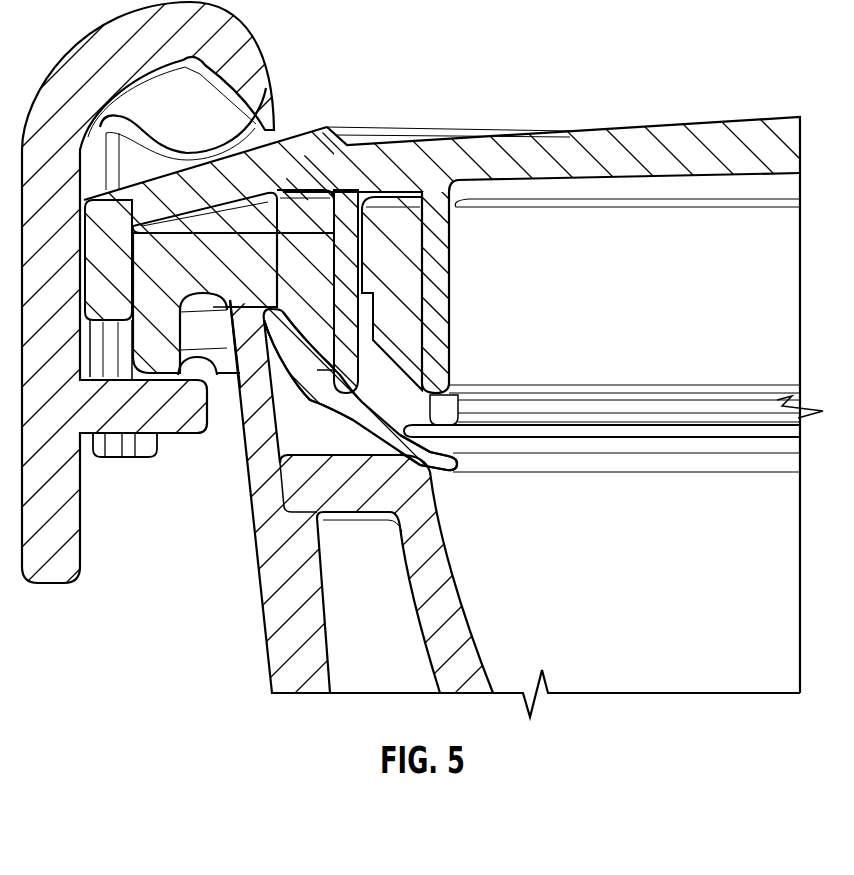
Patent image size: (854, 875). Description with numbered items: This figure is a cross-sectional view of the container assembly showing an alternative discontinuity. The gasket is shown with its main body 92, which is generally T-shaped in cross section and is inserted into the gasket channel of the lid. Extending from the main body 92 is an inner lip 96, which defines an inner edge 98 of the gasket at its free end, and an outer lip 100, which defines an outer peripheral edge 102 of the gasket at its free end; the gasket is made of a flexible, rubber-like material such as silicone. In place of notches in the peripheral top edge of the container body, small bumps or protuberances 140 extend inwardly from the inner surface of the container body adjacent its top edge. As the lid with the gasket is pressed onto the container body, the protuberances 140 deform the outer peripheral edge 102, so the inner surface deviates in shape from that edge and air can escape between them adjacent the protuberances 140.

The main body 92 is at (413, 243).
The inner lip 96 is at (552, 443).
The inner edge 98 is at (452, 465).
The outer lip 100 is at (275, 333).
The outer peripheral edge 102 is at (302, 377).
The bumps or protuberances 140 is at (273, 253).